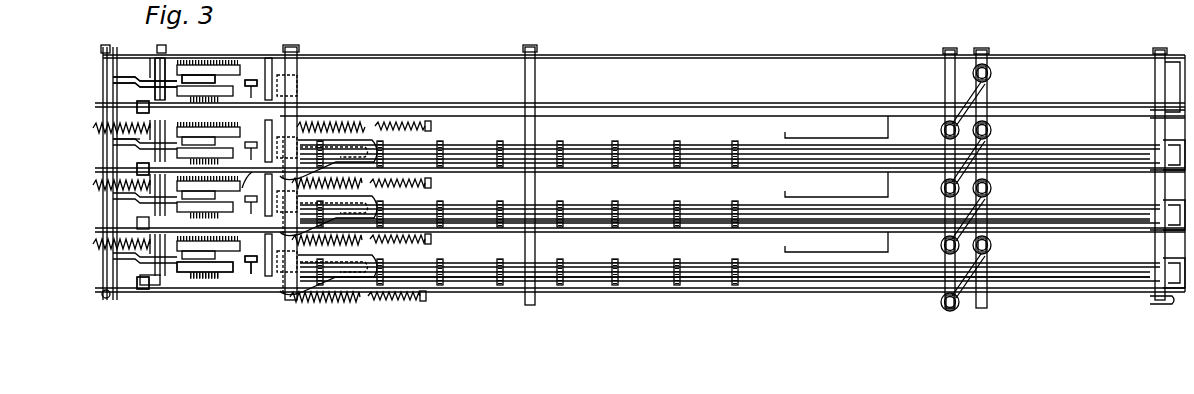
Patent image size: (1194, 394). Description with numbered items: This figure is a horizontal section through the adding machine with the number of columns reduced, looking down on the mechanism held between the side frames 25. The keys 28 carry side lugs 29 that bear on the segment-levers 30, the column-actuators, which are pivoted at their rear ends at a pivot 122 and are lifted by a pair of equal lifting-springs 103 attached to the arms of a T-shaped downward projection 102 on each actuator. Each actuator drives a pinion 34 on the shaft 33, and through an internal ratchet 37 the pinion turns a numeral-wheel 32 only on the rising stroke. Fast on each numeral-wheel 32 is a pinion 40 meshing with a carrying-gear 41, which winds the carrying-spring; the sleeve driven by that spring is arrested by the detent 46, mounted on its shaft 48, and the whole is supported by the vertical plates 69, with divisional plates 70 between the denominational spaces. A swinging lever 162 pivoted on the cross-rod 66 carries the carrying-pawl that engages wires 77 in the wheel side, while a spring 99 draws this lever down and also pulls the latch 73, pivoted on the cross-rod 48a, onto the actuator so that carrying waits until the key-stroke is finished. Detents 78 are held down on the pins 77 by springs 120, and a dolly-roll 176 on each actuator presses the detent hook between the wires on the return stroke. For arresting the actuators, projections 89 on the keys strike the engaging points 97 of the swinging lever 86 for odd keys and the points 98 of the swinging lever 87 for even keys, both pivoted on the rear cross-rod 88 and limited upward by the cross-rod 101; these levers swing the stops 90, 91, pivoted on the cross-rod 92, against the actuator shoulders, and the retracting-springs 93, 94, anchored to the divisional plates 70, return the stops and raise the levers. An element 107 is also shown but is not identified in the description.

The side frames 25 is at (643, 55).
The keys 28 is at (498, 203).
The side lugs 29 is at (612, 204).
The segment-levers 30 is at (645, 103).
The numeral-wheels 32 is at (211, 66).
The shaft 33 is at (215, 288).
The pinion 34 is at (191, 283).
The internal ratchet 37 is at (185, 270).
The pinion 40 is at (236, 83).
The carrying-gears 41 is at (110, 170).
The detent 46 is at (112, 110).
The shaft 48 is at (115, 143).
The cross-rod 48a is at (107, 45).
The cross-rod 66 is at (160, 50).
The vertical plates 69 is at (100, 70).
The divisional plates 70 is at (778, 113).
The latch 73 is at (118, 152).
The wires 77 is at (250, 184).
The detents 78 is at (182, 60).
The swinging lever 86 is at (1093, 268).
The swinging lever 87 is at (1047, 266).
The cross-rod 88 is at (1157, 50).
The projections 89 is at (498, 142).
The stop 90 is at (246, 98).
The stop 91 is at (398, 142).
The cross-rod 92 is at (291, 85).
The retracting-spring 93 is at (383, 241).
The retracting-spring 94 is at (362, 125).
The engaging points 97 is at (620, 285).
The engaging points 98 is at (726, 262).
The spring 99 is at (114, 190).
The cross-rod 101 is at (535, 247).
The downward projection 102 is at (992, 186).
The lifting-springs 103 is at (960, 126).
The slide bar 107 is at (677, 262).
The springs 120 is at (148, 280).
The pivot 122 is at (1158, 300).
The swinging lever 162 is at (110, 90).
The dolly-roll 176 is at (258, 86).